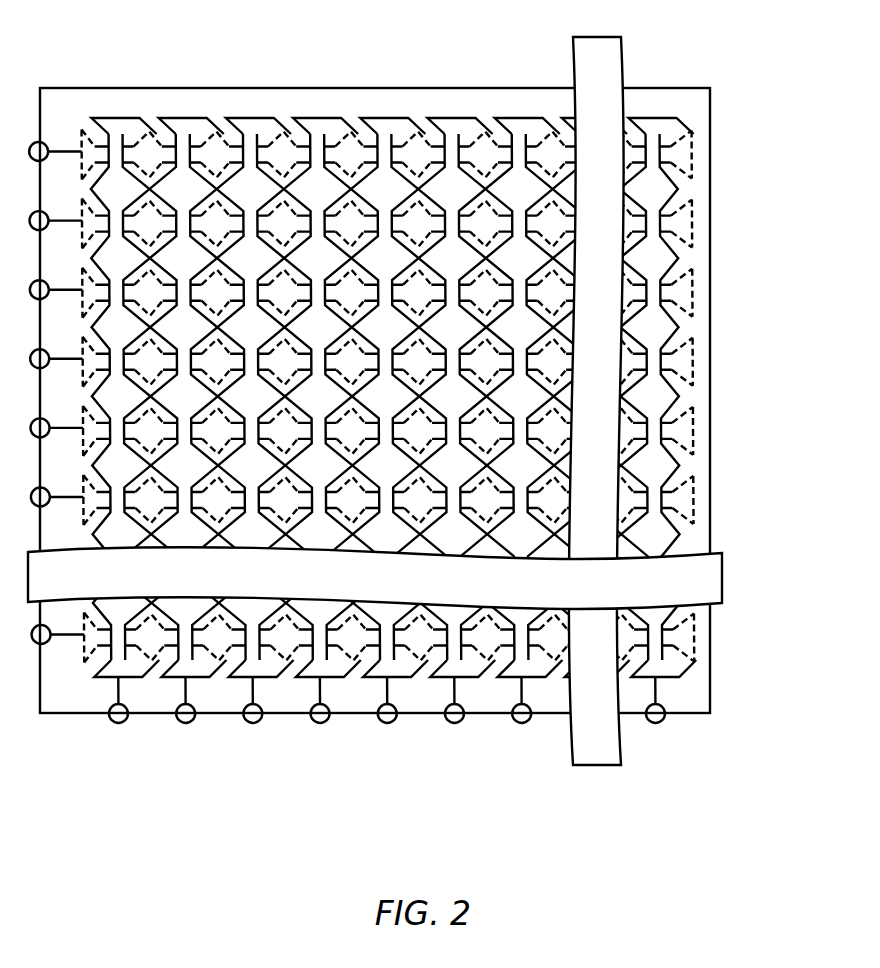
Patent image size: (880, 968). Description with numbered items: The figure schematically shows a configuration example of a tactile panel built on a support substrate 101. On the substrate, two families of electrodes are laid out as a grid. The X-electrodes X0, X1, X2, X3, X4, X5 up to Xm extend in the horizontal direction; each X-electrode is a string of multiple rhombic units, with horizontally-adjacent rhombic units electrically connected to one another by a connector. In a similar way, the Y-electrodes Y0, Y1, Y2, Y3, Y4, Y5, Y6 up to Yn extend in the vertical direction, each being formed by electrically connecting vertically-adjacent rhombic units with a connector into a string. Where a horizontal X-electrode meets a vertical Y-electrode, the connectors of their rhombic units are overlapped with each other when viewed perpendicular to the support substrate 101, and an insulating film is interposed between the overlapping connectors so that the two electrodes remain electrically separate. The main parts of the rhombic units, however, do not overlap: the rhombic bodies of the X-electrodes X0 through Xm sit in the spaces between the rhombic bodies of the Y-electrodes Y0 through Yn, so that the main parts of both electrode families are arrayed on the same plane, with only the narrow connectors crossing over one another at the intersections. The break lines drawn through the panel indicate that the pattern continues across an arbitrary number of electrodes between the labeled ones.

The support substrate 101 is at (710, 97).
The Y-electrode Y0 is at (123, 115).
The Y-electrode Y1 is at (190, 115).
The Y-electrode Y2 is at (257, 115).
The Y-electrode Y3 is at (324, 115).
The Y-electrode Y4 is at (392, 115).
The Y-electrode Y5 is at (459, 115).
The Y-electrode Y6 is at (526, 115).
The Y-electrode Yn is at (663, 117).
The X-electrode X0 is at (412, 155).
The X-electrode X1 is at (412, 224).
The X-electrode X2 is at (413, 293).
The X-electrode X3 is at (413, 362).
The X-electrode X4 is at (413, 431).
The X-electrode X5 is at (414, 500).
The X-electrode Xm is at (418, 638).